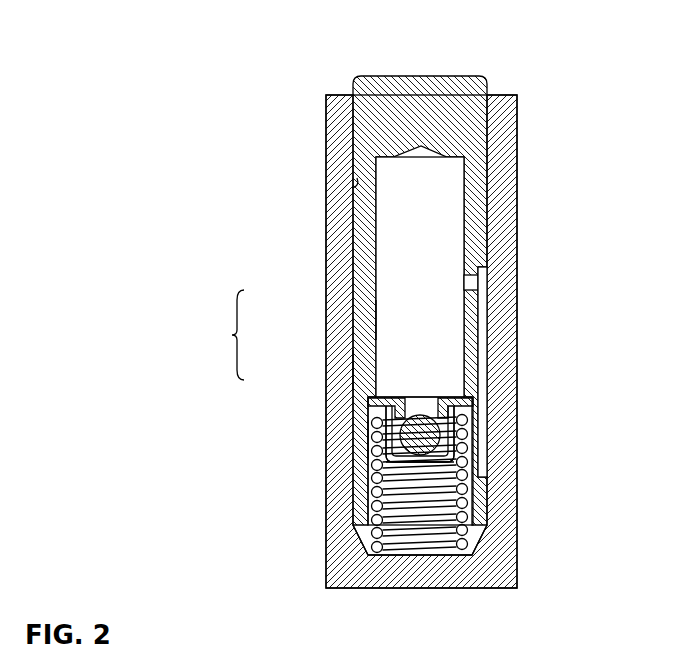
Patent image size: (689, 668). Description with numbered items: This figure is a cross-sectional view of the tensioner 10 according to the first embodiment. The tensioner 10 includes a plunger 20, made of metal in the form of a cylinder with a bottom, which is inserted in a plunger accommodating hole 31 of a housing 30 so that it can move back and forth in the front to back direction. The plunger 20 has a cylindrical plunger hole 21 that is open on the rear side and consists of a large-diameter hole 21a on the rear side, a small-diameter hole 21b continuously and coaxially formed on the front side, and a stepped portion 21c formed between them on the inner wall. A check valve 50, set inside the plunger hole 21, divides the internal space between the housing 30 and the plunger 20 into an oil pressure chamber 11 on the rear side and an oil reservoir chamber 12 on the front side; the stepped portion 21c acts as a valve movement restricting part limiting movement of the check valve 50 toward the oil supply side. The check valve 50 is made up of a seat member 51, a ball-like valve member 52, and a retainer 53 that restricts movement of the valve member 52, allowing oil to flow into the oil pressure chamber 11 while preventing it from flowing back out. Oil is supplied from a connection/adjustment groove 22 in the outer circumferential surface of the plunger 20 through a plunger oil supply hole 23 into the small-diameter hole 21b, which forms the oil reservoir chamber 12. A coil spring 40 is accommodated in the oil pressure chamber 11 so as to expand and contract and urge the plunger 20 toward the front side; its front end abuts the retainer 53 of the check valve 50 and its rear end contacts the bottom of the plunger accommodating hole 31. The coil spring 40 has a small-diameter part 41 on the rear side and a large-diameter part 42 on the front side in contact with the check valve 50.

The tensioner 10 is at (250, 82).
The oil pressure chamber 11 is at (409, 519).
The oil reservoir chamber 12 is at (409, 292).
The plunger 20 is at (447, 95).
The plunger hole 21 is at (224, 335).
The large-diameter hole 21a is at (372, 440).
The small-diameter hole 21b is at (383, 320).
The stepped portion 21c is at (365, 370).
The connection/adjustment groove 22 is at (482, 300).
The plunger oil supply hole 23 is at (472, 283).
The housing 30 is at (505, 118).
The plunger accommodating hole 31 is at (352, 188).
The coil spring 40 is at (366, 513).
The small-diameter part 41 is at (473, 513).
The large-diameter part 42 is at (441, 433).
The check valve 50 is at (375, 468).
The seat member 51 is at (470, 399).
The valve member 52 is at (456, 452).
The retainer 53 is at (466, 483).